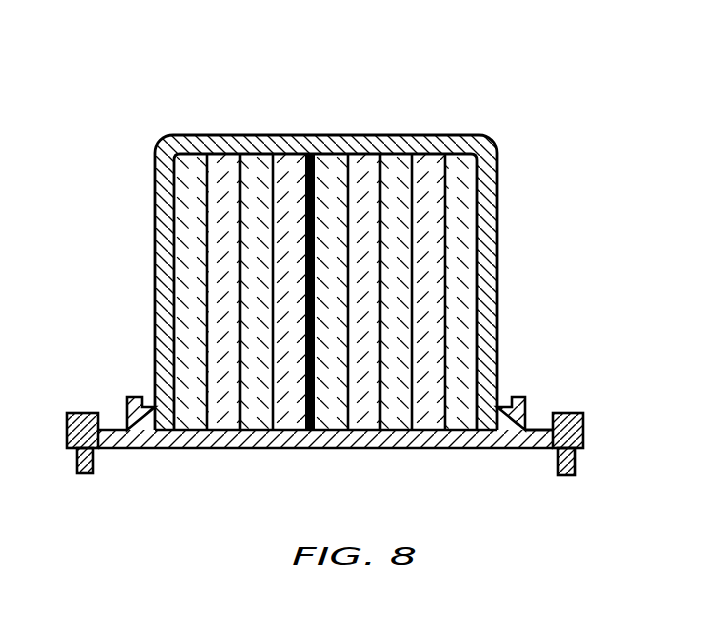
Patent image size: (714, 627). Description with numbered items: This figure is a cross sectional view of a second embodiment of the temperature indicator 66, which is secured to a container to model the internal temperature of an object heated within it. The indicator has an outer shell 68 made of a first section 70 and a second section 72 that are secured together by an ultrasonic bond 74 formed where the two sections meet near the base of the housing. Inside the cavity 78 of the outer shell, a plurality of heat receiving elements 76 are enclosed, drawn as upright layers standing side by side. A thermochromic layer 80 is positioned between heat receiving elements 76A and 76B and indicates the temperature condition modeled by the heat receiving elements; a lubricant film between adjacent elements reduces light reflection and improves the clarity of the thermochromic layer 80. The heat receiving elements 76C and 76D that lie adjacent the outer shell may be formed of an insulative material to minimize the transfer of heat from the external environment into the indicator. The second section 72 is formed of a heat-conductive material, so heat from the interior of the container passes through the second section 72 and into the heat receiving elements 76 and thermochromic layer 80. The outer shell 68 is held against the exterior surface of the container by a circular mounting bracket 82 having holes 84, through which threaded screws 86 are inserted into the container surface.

The temperature indicator 66 is at (414, 65).
The outer shell 68 is at (347, 254).
The first section 70 is at (374, 292).
The second section 72 is at (325, 475).
The ultrasonic bond 74 is at (341, 414).
The heat receiving elements 76 is at (339, 327).
The heat receiving element 76A is at (274, 330).
The heat receiving element 76B is at (346, 330).
The heat receiving element 76C is at (191, 342).
The heat receiving element 76D is at (517, 292).
The cavity 78 is at (326, 261).
The thermochromic layer 80 is at (210, 292).
The mounting bracket 82 is at (568, 394).
The holes 84 is at (58, 464).
The threaded screws 86 is at (586, 474).